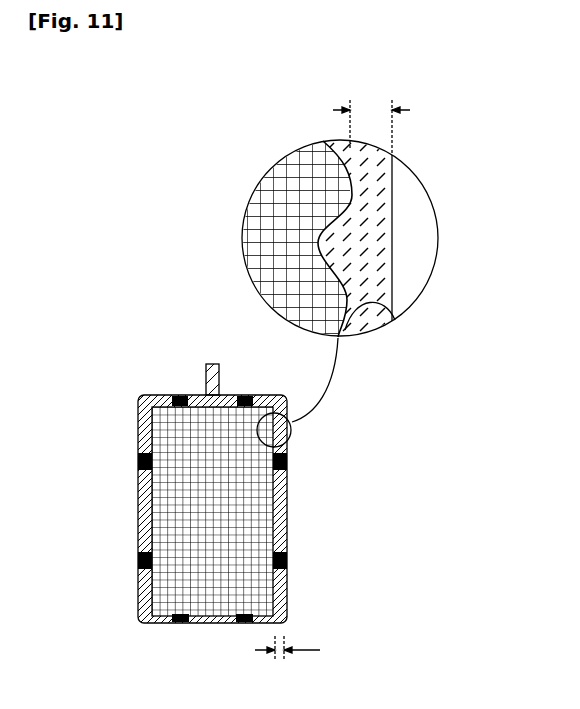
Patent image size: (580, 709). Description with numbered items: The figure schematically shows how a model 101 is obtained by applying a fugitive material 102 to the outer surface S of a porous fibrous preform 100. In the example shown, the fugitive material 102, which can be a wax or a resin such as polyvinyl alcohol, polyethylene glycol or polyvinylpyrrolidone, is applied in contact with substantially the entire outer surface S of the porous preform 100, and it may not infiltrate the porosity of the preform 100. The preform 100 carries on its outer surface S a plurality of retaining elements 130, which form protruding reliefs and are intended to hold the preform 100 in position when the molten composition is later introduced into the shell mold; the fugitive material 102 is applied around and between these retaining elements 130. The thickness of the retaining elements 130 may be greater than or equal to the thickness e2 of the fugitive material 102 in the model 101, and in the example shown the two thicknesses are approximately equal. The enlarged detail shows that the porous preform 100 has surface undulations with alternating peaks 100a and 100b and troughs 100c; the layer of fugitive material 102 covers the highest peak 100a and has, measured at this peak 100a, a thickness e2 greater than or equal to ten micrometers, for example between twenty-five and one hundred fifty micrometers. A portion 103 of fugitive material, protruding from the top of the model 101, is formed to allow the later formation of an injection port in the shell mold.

The porous fibrous preform 100 is at (292, 152).
The highest peak 100a is at (345, 193).
The peak 100b is at (335, 305).
The trough 100c is at (312, 243).
The model 101 is at (149, 384).
The fugitive material 102 is at (143, 540).
The portion of fugitive material 103 is at (220, 378).
The retaining elements 130 is at (140, 461).
The outer surface S is at (350, 325).
The thickness of the fugitive material e2 is at (332, 372).